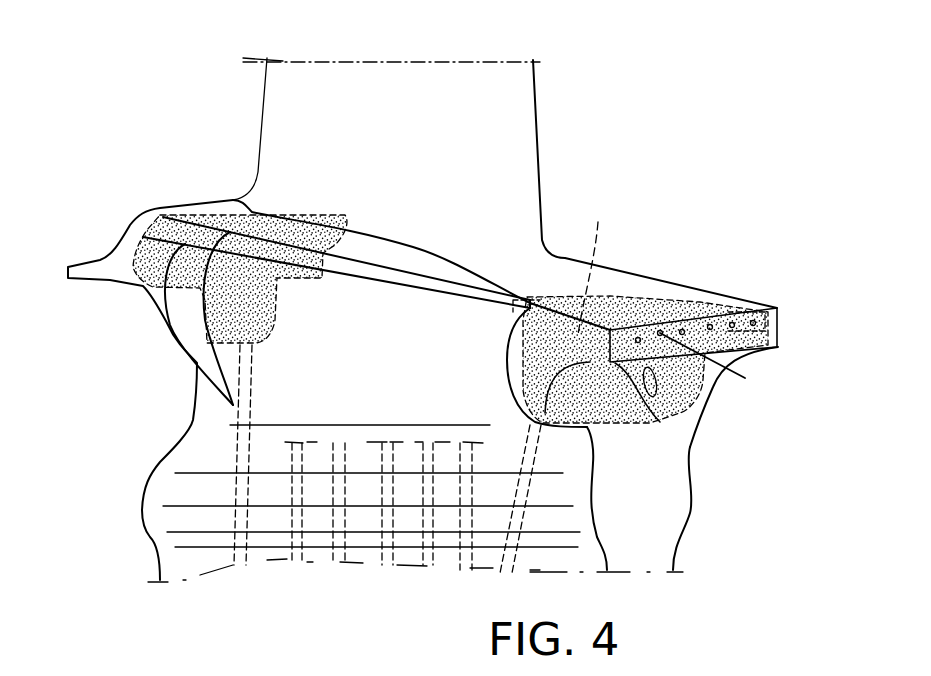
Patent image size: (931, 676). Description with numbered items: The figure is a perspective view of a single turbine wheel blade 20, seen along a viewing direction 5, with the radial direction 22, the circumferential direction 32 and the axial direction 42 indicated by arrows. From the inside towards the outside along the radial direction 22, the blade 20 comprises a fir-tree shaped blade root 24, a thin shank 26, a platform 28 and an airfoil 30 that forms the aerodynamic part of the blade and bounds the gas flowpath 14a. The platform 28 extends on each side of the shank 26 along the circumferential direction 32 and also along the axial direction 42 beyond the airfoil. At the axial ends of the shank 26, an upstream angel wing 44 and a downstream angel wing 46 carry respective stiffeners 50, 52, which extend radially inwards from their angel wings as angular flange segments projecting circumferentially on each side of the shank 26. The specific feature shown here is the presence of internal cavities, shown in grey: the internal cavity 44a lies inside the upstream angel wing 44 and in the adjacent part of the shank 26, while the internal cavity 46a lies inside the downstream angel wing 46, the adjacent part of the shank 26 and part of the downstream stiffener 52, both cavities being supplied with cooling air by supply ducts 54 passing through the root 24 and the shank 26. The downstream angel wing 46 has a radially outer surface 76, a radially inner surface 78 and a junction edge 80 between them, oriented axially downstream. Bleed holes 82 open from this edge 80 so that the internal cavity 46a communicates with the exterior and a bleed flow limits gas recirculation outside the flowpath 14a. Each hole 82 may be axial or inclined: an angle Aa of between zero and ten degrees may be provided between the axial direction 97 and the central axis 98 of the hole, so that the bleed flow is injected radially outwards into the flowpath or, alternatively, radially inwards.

The section view direction 5 is at (655, 67).
The flowpath 14a is at (672, 205).
The blade 20 is at (126, 475).
The radial direction 22 is at (743, 606).
The blade root 24 is at (199, 548).
The shank 26 is at (350, 327).
The platform 28 is at (647, 313).
The airfoil 30 is at (358, 79).
The circumferential direction 32 is at (115, 158).
The axial direction 42 is at (756, 585).
The upstream angel wing 44 is at (103, 251).
The internal cavity 44a is at (137, 213).
The downstream angel wing 46 is at (746, 358).
The internal cavity 46a is at (597, 265).
The stiffener 50 is at (160, 313).
The downstream stiffener 52 is at (517, 390).
The air supply ducts 54 is at (463, 558).
The radially outer surface 76 is at (720, 294).
The radially inner surface 78 is at (643, 422).
The junction edge 80 is at (773, 333).
The bleed holes 82 is at (753, 322).
The axial direction 97 is at (683, 363).
The central axis 98 is at (690, 308).
The angle Aa is at (715, 363).